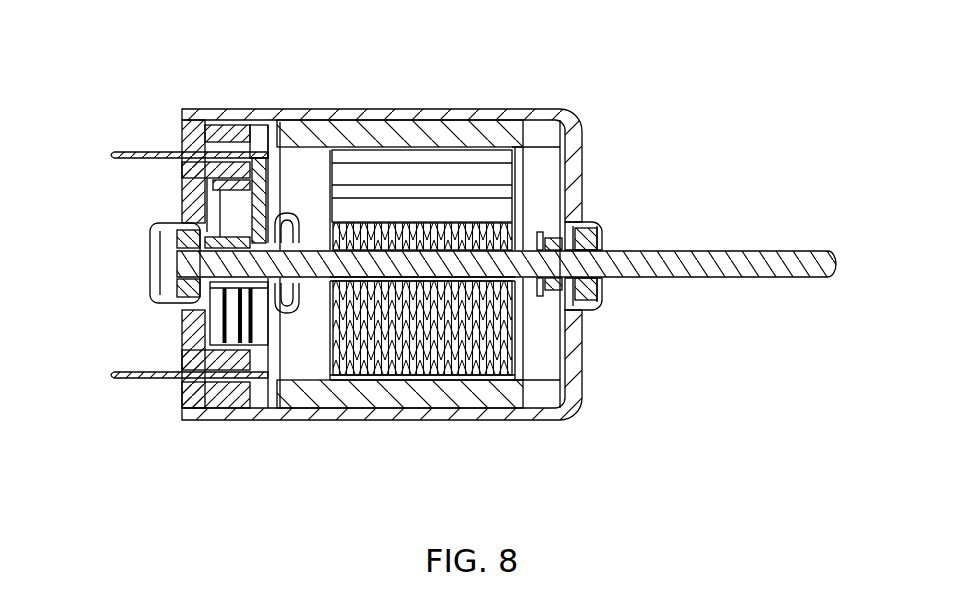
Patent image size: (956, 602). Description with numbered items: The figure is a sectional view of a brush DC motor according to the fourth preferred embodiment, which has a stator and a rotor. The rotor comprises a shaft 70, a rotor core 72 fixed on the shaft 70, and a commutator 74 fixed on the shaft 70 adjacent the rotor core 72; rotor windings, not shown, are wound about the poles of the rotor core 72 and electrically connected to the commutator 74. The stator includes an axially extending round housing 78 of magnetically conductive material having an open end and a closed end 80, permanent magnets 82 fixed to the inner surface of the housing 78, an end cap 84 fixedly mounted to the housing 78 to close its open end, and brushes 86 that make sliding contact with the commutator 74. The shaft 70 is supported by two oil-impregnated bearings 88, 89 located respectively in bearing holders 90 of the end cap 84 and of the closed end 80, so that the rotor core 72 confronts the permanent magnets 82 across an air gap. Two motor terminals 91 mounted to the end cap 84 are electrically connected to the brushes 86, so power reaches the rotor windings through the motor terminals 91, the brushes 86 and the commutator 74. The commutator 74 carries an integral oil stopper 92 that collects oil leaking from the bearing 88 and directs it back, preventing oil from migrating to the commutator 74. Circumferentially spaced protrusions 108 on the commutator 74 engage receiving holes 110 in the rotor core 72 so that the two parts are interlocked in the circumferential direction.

The shaft 70 is at (770, 250).
The rotor core 72 is at (452, 330).
The commutator 74 is at (237, 248).
The housing 78 is at (507, 108).
The closed end 80 is at (583, 148).
The permanent magnets 82 is at (408, 135).
The end cap 84 is at (190, 325).
The brushes 86 is at (240, 305).
The bearing 88 is at (178, 282).
The bearing 89 is at (588, 283).
The bearing holders 90 is at (586, 221).
The motor terminals 91 is at (137, 150).
The oil stopper 92 is at (180, 223).
The protrusions 108 is at (335, 280).
The receiving holes 110 is at (355, 293).